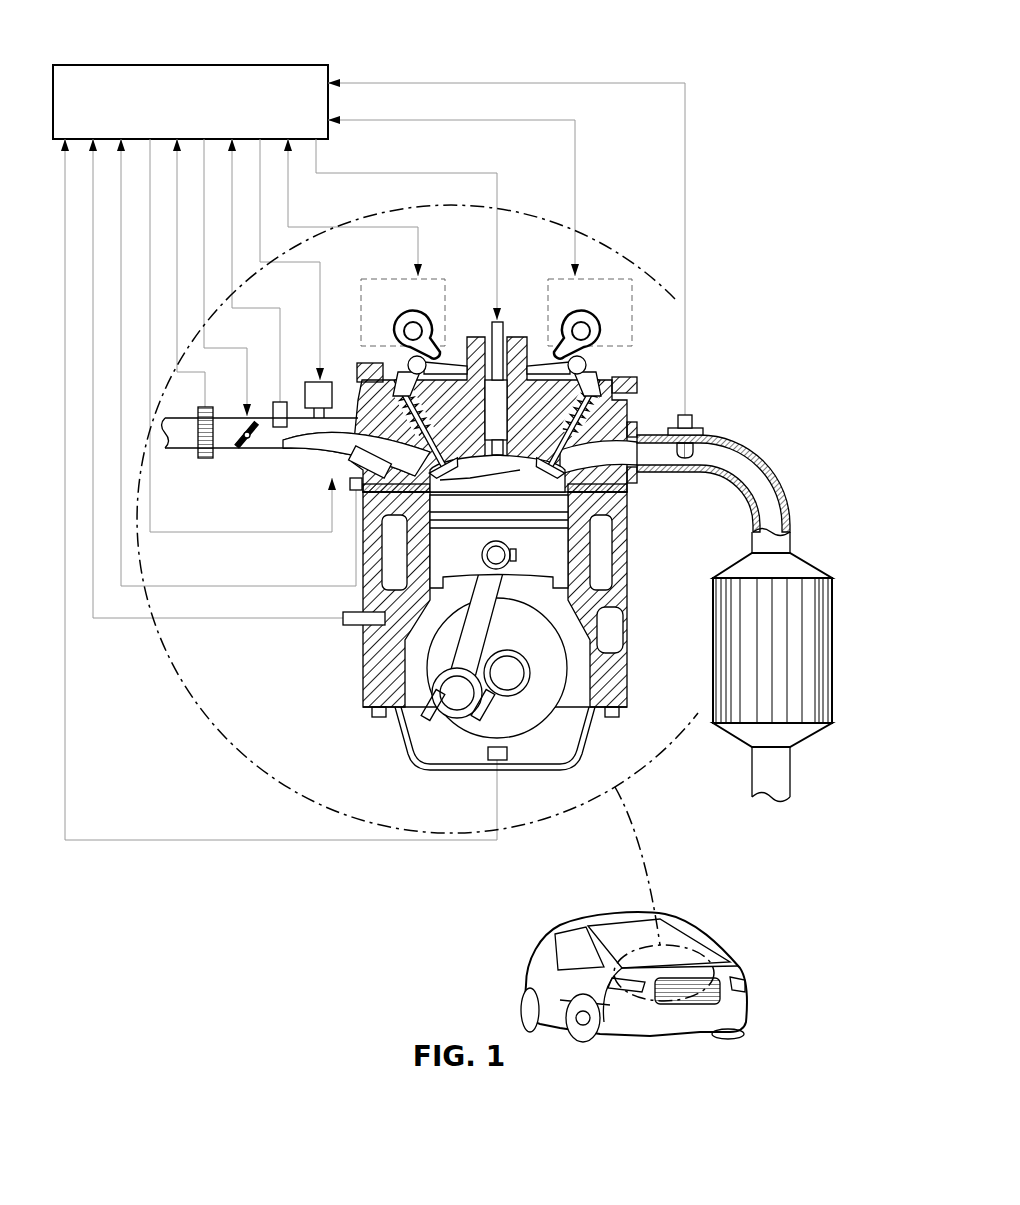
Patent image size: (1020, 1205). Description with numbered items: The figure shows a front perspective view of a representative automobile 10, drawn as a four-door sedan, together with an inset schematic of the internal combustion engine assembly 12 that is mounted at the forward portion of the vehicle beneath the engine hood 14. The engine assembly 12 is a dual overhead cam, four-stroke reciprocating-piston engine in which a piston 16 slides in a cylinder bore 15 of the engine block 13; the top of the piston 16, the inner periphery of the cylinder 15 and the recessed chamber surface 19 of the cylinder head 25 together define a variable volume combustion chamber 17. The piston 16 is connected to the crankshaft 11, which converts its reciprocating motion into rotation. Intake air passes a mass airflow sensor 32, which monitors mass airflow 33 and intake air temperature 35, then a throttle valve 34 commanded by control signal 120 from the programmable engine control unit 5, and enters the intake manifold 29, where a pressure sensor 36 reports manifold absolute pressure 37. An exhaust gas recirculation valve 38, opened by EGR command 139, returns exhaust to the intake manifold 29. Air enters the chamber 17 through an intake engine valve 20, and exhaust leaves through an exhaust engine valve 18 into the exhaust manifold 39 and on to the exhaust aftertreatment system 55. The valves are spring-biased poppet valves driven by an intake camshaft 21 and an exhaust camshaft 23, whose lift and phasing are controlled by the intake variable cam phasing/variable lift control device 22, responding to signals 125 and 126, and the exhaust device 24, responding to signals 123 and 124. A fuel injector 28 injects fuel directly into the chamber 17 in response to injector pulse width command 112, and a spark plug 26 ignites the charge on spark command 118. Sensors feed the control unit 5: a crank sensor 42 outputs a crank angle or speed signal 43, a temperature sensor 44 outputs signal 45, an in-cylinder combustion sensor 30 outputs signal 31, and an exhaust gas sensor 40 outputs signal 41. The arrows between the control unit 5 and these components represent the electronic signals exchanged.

The programmable engine control unit 5 is at (182, 113).
The automobile 10 is at (661, 932).
The crankshaft 11 is at (545, 718).
The internal combustion engine assembly 12 is at (190, 74).
The engine block 13 is at (523, 631).
The engine hood 14 is at (715, 950).
The cylinder bore 15 is at (562, 529).
The piston 16 is at (553, 541).
The combustion chamber 17 is at (451, 495).
The exhaust engine valve 18 is at (642, 466).
The recessed chamber surface 19 is at (605, 493).
The intake engine valve 20 is at (300, 441).
The intake camshaft 21 is at (396, 330).
The intake variable cam phasing/variable lift control device 22 is at (379, 307).
The exhaust camshaft 23 is at (598, 330).
The exhaust variable cam phasing/variable lift control device 24 is at (589, 307).
The cylinder head 25 is at (630, 393).
The spark plug 26 is at (504, 323).
The fuel injector 28 is at (348, 463).
The intake manifold 29 is at (356, 422).
The in-cylinder combustion sensor 30 is at (349, 492).
The combustion sensor signal 31 is at (221, 583).
The mass airflow sensor 32 is at (206, 458).
The mass airflow 33 is at (209, 273).
The throttle valve 34 is at (249, 447).
The intake air temperature 35 is at (180, 381).
The pressure sensor 36 is at (275, 404).
The manifold absolute pressure 37 is at (262, 303).
The exhaust gas recirculation valve 38 is at (310, 384).
The exhaust manifold 39 is at (650, 434).
The exhaust gas sensor 40 is at (690, 428).
The exhaust gas sensor signal 41 is at (646, 83).
The crank sensor 42 is at (506, 761).
The crank angle/speed signal 43 is at (226, 839).
The temperature sensor 44 is at (352, 626).
The temperature signal 45 is at (264, 615).
The exhaust aftertreatment system 55 is at (803, 578).
The injector pulse width command 112 is at (180, 528).
The spark command 118 is at (460, 168).
The throttle control signal 120 is at (223, 343).
The exhaust valve lift control signal 123 is at (463, 183).
The exhaust cam phasing control signal 124 is at (513, 116).
The intake valve lift control signal 125 is at (353, 207).
The intake cam phasing control signal 126 is at (315, 225).
The EGR command 139 is at (318, 257).